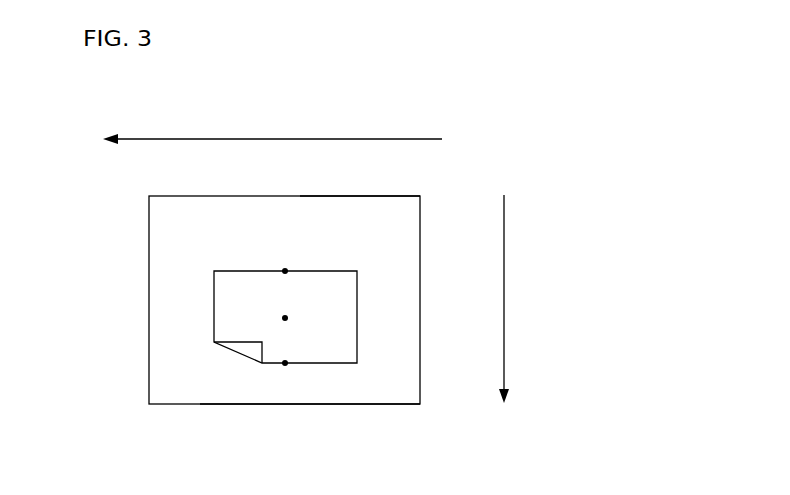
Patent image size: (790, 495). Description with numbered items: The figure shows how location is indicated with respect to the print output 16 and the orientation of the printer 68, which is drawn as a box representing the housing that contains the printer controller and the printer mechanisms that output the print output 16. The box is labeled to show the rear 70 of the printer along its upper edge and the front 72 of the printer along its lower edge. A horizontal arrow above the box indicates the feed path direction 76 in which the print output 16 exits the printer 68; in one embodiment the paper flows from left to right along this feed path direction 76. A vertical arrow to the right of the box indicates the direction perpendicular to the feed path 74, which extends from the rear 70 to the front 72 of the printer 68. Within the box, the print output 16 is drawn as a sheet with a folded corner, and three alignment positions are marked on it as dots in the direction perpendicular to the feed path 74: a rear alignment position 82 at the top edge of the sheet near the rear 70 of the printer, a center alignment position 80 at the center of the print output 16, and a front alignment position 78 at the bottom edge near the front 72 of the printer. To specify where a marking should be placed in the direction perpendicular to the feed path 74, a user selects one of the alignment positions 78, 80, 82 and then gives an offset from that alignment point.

The print output 16 is at (357, 285).
The printer 68 is at (148, 223).
The rear of the printer 70 is at (368, 196).
The front of the printer 72 is at (380, 404).
The direction perpendicular to the feed path 74 is at (504, 257).
The feed path direction 76 is at (442, 140).
The front alignment position 78 is at (285, 363).
The center alignment position 80 is at (285, 318).
The rear alignment position 82 is at (285, 271).